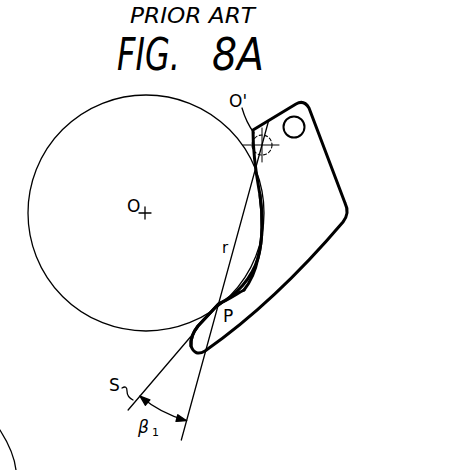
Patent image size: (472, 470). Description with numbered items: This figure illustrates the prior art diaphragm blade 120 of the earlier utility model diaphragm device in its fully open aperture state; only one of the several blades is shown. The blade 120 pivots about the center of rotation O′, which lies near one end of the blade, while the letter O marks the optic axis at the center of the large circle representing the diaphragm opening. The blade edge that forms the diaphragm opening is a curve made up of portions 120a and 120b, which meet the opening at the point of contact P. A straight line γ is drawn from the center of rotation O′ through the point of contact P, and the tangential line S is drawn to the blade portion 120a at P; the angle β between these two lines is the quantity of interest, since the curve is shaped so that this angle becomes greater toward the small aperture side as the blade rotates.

The pivoted lever arm (prior art) 120 is at (300, 266).
The cam follower surface portion of lever arm 120a is at (218, 304).
The cam follower surface portion of lever arm 120b is at (247, 288).